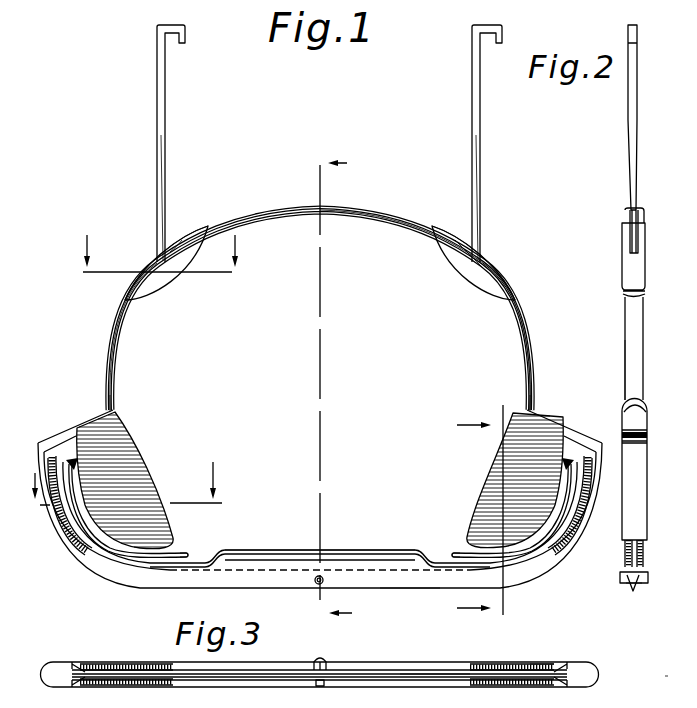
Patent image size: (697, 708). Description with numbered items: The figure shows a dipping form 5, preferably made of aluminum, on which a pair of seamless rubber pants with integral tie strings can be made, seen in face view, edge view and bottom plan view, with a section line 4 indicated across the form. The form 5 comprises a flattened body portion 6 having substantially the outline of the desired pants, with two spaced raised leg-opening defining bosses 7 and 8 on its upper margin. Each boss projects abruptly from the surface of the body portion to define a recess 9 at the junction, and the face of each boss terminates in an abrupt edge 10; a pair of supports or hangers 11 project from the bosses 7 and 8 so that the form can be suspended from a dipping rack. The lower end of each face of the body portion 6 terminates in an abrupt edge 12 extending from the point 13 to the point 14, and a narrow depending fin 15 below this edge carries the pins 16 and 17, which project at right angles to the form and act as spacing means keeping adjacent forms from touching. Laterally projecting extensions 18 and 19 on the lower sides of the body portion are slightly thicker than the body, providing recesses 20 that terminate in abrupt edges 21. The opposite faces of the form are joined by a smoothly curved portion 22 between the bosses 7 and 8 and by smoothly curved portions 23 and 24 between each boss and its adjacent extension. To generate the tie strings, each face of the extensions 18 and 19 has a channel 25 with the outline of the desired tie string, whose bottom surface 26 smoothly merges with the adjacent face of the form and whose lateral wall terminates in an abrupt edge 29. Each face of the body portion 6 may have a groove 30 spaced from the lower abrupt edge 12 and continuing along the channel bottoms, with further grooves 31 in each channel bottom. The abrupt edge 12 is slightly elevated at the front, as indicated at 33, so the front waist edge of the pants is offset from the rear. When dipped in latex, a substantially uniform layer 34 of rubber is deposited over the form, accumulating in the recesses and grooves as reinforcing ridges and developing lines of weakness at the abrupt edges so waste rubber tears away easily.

In FIG. 1, the section line 4- 4 is at (331, 383).
In FIG. 1, the form 5 is at (383, 206).
In FIG. 1, the flattened body portion 6 is at (527, 304).
In FIG. 2, the flattened body portion 6 is at (647, 356).
In FIG. 3, the flattened body portion 6 is at (385, 661).
In FIG. 1, the leg-opening defining boss 7 is at (182, 240).
In FIG. 1, the leg-opening defining boss 8 is at (445, 242).
In FIG. 2, the leg-opening defining boss 8 is at (645, 276).
In FIG. 1, the recess 9 is at (211, 228).
In FIG. 1, the abrupt edge 10 is at (207, 226).
In FIG. 1, the supports or hangers 11 is at (163, 150).
In FIG. 2, the supports or hangers 11 is at (637, 167).
In FIG. 1, the abrupt edge 12 is at (387, 558).
In FIG. 2, the abrupt edge 12 is at (646, 563).
In FIG. 3, the abrupt edge 12 is at (222, 668).
In FIG. 1, the point 13 is at (80, 549).
In FIG. 3, the point 13 is at (86, 664).
In FIG. 1, the point 14 is at (553, 544).
In FIG. 2, the point 14 is at (645, 550).
In FIG. 3, the point 14 is at (549, 663).
In FIG. 1, the depending fin 15 is at (409, 580).
In FIG. 2, the depending fin 15 is at (649, 578).
In FIG. 3, the depending fin 15 is at (420, 672).
In FIG. 1, the pin 16 is at (317, 584).
In FIG. 2, the pin 16 is at (633, 590).
In FIG. 3, the pin 16 is at (320, 660).
In FIG. 2, the pin 17 is at (649, 585).
In FIG. 3, the pin 17 is at (318, 686).
In FIG. 1, the laterally projecting extension 18 is at (60, 428).
In FIG. 3, the laterally projecting extension 18 is at (62, 664).
In FIG. 1, the laterally projecting extension 19 is at (551, 410).
In FIG. 2, the laterally projecting extension 19 is at (648, 425).
In FIG. 3, the laterally projecting extension 19 is at (575, 663).
In FIG. 1, the recess 20 is at (110, 410).
In FIG. 2, the recess 20 is at (640, 403).
In FIG. 3, the recess 20 is at (174, 666).
In FIG. 1, the abrupt edge 21 is at (143, 481).
In FIG. 3, the abrupt edge 21 is at (472, 661).
In FIG. 1, the smoothly curved portion 22 is at (286, 211).
In FIG. 1, the smoothly curved portion 23 is at (112, 334).
In FIG. 1, the smoothly curved portion 24 is at (533, 365).
In FIG. 2, the smoothly curved portion 24 is at (636, 334).
In FIG. 1, the channel 25 is at (60, 440).
In FIG. 1, the bottom surface 26 is at (97, 523).
In FIG. 1, the abrupt edge 29 is at (62, 448).
In FIG. 1, the groove 30 is at (348, 550).
In FIG. 1, the groove 31 is at (183, 551).
In FIG. 1, the elevated portion of abrupt edge 33 is at (249, 550).
In FIG. 3, the layer 34 is at (677, 671).